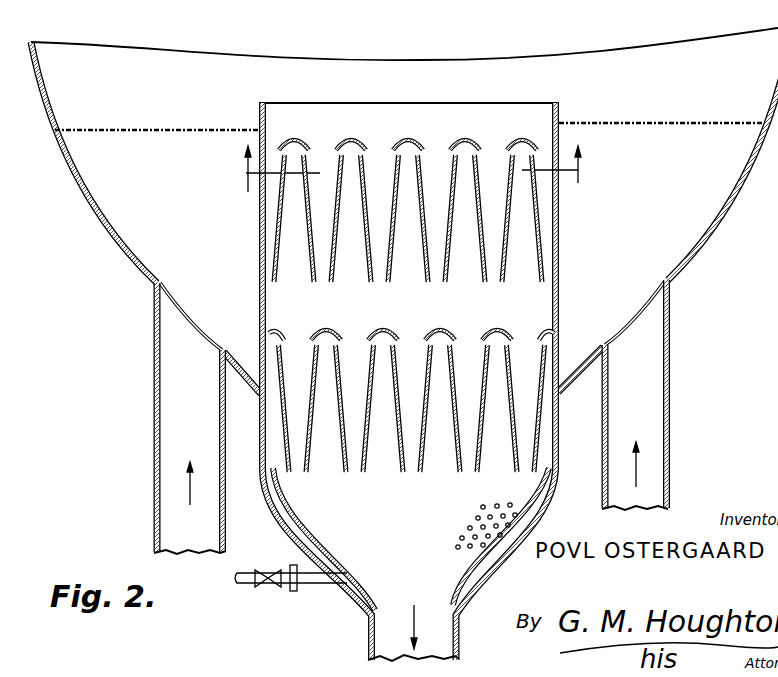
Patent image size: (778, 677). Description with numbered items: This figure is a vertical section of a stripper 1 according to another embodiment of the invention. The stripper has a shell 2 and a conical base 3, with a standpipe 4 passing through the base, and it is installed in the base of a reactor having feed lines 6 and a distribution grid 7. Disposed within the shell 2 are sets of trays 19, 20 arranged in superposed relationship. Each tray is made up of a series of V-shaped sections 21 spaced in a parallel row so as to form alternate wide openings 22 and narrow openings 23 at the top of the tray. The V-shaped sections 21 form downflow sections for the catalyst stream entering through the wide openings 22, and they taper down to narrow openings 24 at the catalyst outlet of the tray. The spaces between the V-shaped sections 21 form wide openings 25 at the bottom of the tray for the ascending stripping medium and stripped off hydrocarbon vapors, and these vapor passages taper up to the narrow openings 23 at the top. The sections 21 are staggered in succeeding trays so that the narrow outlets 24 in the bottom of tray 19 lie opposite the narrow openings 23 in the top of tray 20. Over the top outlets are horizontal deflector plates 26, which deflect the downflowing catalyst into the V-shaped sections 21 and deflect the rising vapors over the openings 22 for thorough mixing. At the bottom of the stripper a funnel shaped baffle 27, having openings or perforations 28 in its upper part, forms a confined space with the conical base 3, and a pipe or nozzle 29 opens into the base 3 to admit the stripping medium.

The stripper 1 is at (562, 292).
The shell 2 is at (259, 305).
The conical base 3 is at (490, 585).
The standpipe 4 is at (460, 643).
The feed lines 6 is at (155, 437).
The distribution grid 7 is at (646, 122).
The tray 19 is at (537, 197).
The tray 20 is at (540, 430).
The V-shaped sections 21 is at (479, 200).
The wide openings 22 is at (493, 157).
The narrow openings 23 is at (468, 158).
The narrow openings 24 is at (381, 283).
The wide openings 25 is at (470, 273).
The horizontal deflector plates 26 is at (410, 141).
The funnel shaped baffle 27 is at (362, 562).
The openings or perforations 28 is at (320, 541).
The pipe or nozzle 29 is at (322, 580).